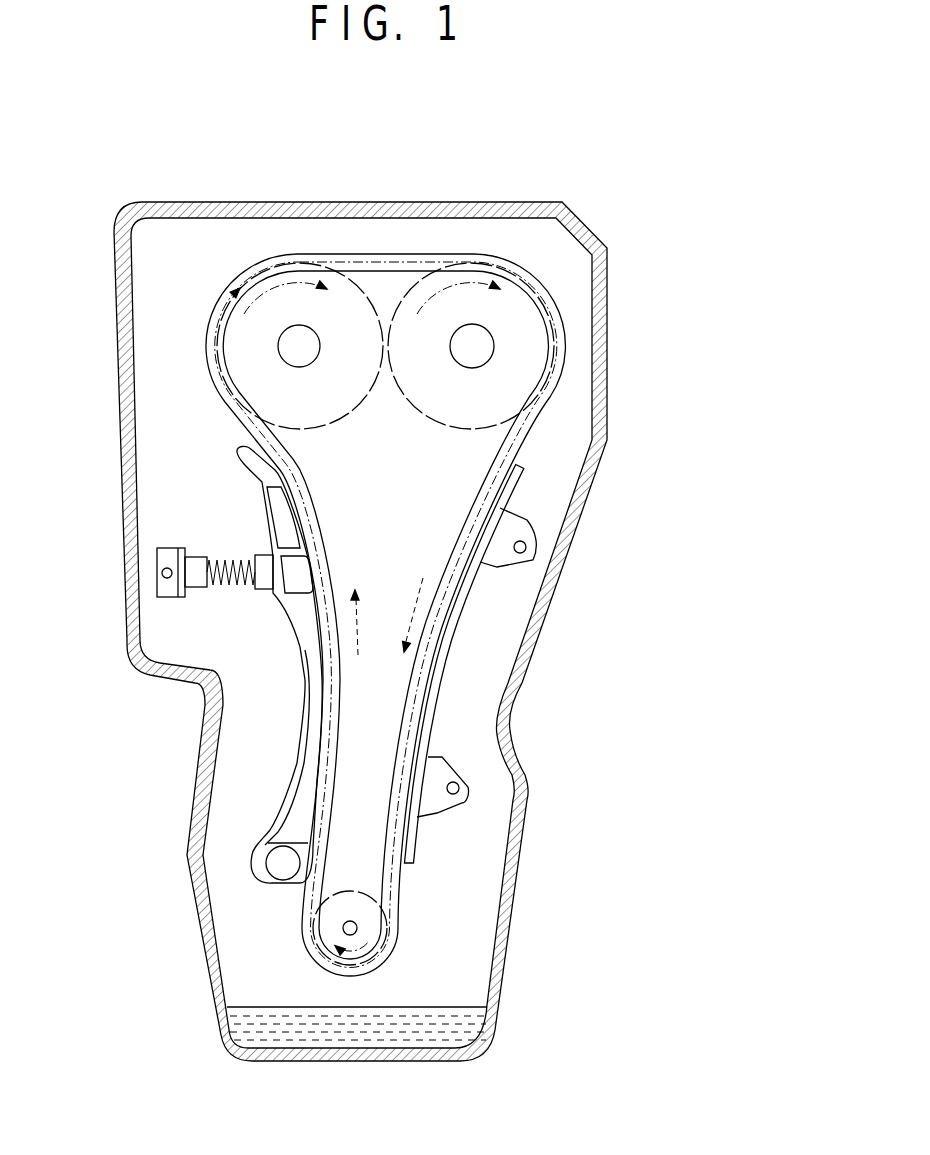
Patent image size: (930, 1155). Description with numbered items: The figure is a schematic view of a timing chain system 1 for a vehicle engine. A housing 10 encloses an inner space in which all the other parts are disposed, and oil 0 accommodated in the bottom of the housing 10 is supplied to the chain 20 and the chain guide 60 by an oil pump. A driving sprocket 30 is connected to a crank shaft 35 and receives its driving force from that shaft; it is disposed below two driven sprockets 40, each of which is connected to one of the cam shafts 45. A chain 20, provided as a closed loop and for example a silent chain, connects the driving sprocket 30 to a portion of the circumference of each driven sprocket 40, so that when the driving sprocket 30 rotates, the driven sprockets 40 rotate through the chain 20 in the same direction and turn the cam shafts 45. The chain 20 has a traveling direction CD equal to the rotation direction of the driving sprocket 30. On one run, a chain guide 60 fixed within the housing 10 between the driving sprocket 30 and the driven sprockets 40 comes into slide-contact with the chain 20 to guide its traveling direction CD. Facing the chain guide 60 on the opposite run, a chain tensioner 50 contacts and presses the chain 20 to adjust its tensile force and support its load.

The timing chain system 1 is at (526, 154).
The housing 10 is at (603, 308).
The chain 20 is at (561, 336).
The driving sprocket 30 is at (325, 927).
The crank shaft 35 is at (347, 925).
The driven sprockets 40 is at (235, 334).
The cam shafts 45 is at (288, 347).
The chain tensioner 50 is at (228, 532).
The chain guide 60 is at (448, 647).
The traveling direction CD is at (221, 302).
The oil 0 is at (476, 1027).